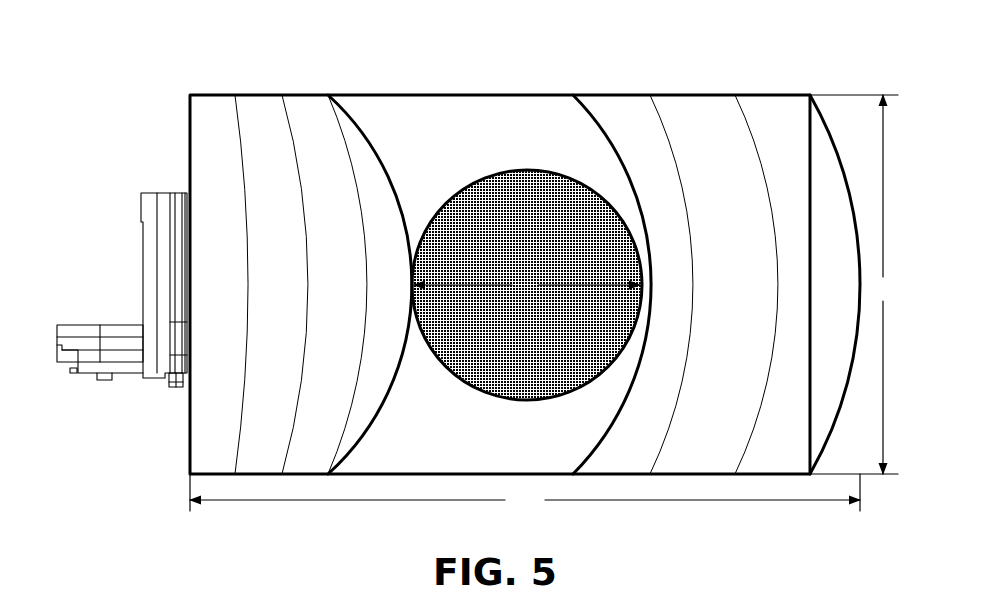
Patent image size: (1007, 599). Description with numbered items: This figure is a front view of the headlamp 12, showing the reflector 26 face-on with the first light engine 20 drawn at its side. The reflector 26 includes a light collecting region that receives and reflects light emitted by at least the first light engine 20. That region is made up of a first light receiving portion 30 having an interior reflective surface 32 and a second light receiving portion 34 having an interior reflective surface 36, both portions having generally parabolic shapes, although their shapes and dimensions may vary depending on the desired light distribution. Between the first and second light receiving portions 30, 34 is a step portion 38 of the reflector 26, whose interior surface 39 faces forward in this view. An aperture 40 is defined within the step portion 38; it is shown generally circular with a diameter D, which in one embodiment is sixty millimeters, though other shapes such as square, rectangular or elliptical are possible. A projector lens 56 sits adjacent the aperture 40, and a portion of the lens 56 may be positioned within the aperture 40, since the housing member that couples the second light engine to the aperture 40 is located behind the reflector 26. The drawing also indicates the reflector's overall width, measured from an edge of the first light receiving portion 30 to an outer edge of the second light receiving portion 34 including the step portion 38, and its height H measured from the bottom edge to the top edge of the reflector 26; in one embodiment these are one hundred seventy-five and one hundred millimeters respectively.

The headlamp 12 is at (888, 48).
The first light engine 20 is at (100, 210).
The reflector 26 is at (148, 80).
The first light receiving portion 30 is at (243, 95).
The interior reflective surface of first light receiving portion 32 is at (296, 276).
The second light receiving portion 34 is at (727, 95).
The interior reflective surface of second light receiving portion 36 is at (752, 280).
The step portion 38 is at (380, 95).
The interior surface of step portion 39 is at (454, 174).
The aperture 40 is at (500, 172).
The projector lens 56 is at (552, 240).